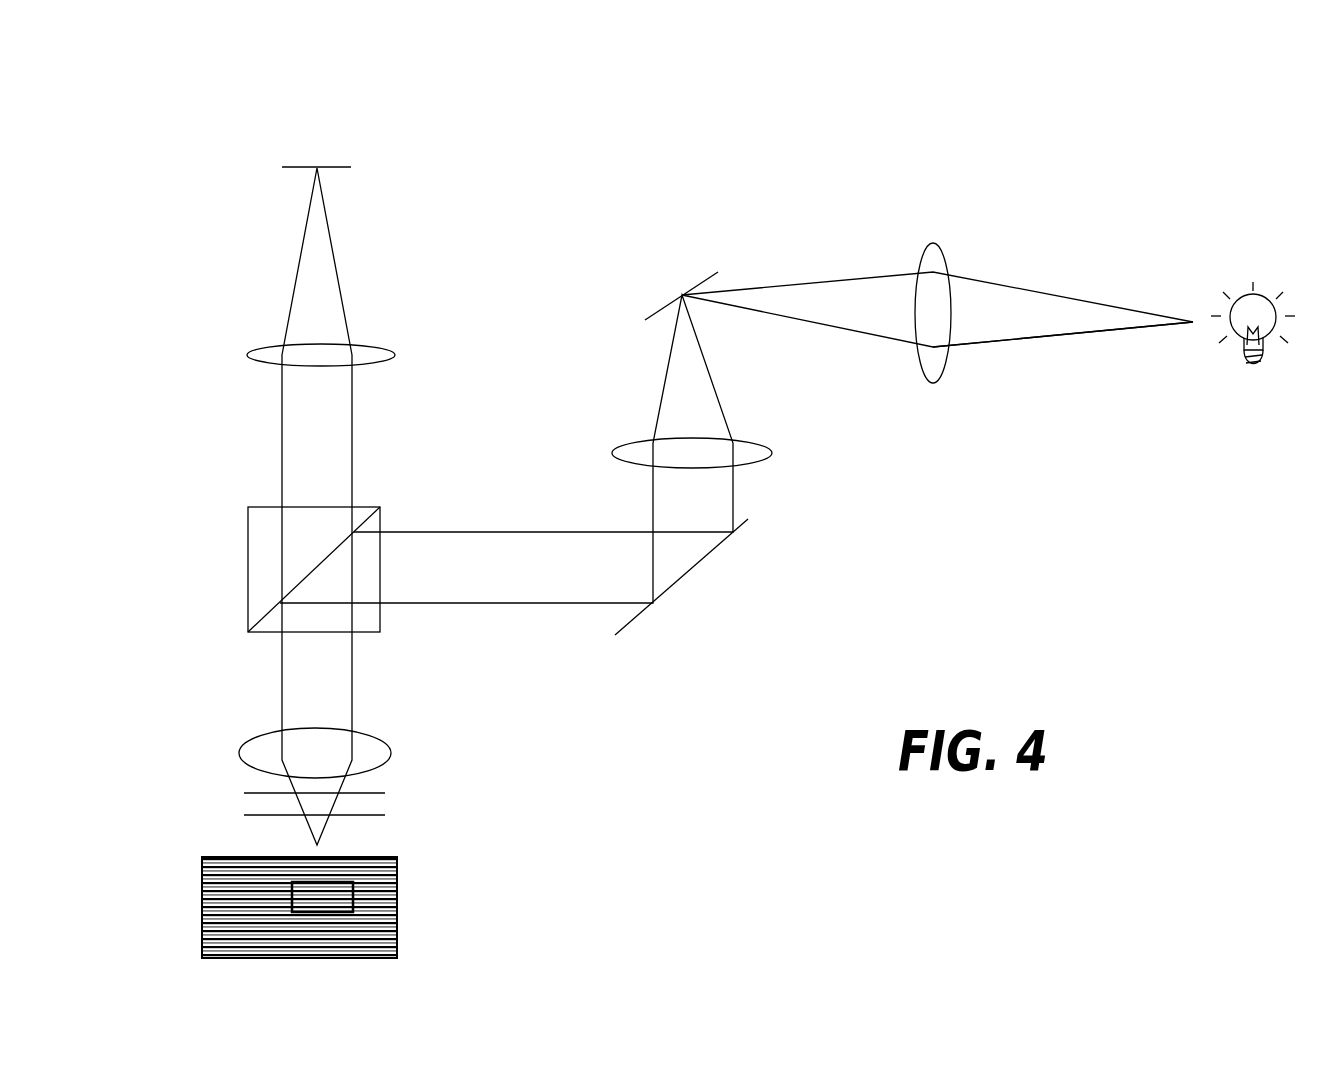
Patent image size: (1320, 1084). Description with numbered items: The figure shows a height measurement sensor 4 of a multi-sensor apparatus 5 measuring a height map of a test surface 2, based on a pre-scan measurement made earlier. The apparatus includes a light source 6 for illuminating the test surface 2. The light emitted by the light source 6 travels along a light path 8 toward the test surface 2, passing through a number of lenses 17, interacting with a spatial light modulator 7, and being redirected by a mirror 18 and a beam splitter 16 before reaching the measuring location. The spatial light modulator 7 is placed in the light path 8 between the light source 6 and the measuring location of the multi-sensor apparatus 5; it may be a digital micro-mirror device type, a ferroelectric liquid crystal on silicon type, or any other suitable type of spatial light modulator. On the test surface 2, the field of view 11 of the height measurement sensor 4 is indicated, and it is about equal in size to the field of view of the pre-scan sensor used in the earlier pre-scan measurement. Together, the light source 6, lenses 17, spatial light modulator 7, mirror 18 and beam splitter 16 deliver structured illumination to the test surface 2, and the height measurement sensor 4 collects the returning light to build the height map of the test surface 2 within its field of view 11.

The test surface 2 is at (178, 912).
The height measurement sensor 4 is at (260, 165).
The multi-sensor apparatus 5 is at (468, 126).
The light source 6 is at (1261, 250).
The spatial light modulator 7 is at (680, 280).
The light path 8 is at (1046, 350).
The field of view 11 is at (346, 890).
The beam splitter 16 is at (211, 585).
The lenses 17 is at (190, 351).
The mirror 18 is at (711, 580).